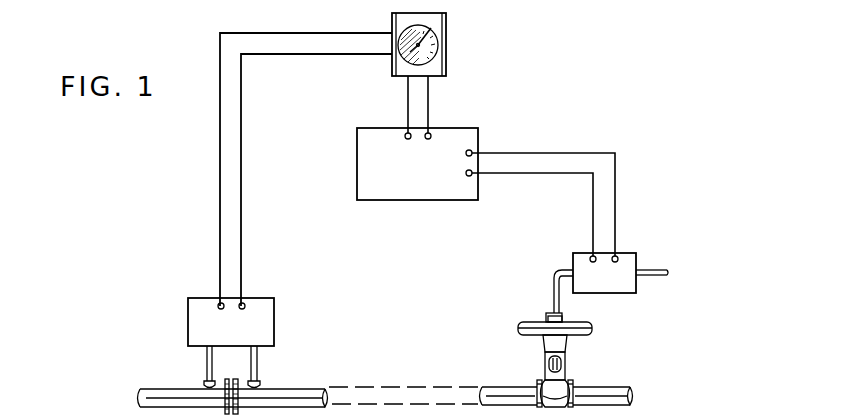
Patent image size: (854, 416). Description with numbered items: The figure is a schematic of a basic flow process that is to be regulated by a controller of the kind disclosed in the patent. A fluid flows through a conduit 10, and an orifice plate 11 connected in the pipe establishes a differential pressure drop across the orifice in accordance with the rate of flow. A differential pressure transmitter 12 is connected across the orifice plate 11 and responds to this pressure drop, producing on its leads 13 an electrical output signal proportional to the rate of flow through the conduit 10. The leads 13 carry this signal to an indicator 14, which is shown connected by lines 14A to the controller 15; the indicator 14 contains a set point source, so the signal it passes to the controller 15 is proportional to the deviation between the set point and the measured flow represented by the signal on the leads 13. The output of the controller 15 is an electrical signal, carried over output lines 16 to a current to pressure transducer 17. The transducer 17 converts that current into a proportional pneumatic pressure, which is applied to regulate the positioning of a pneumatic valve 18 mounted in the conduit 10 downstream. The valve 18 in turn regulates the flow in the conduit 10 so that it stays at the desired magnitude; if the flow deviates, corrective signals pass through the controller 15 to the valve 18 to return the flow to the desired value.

The conduit 10 is at (312, 393).
The orifice plate 11 is at (232, 377).
The differential pressure transmitter 12 is at (192, 313).
The leads 13 is at (241, 195).
The indicator 14 is at (433, 25).
The indicator connecting lines 14A is at (408, 96).
The controller 15 is at (375, 157).
The controller output lines 16 is at (546, 172).
The current to pressure transducer 17 is at (582, 258).
The pneumatic valve 18 is at (580, 366).